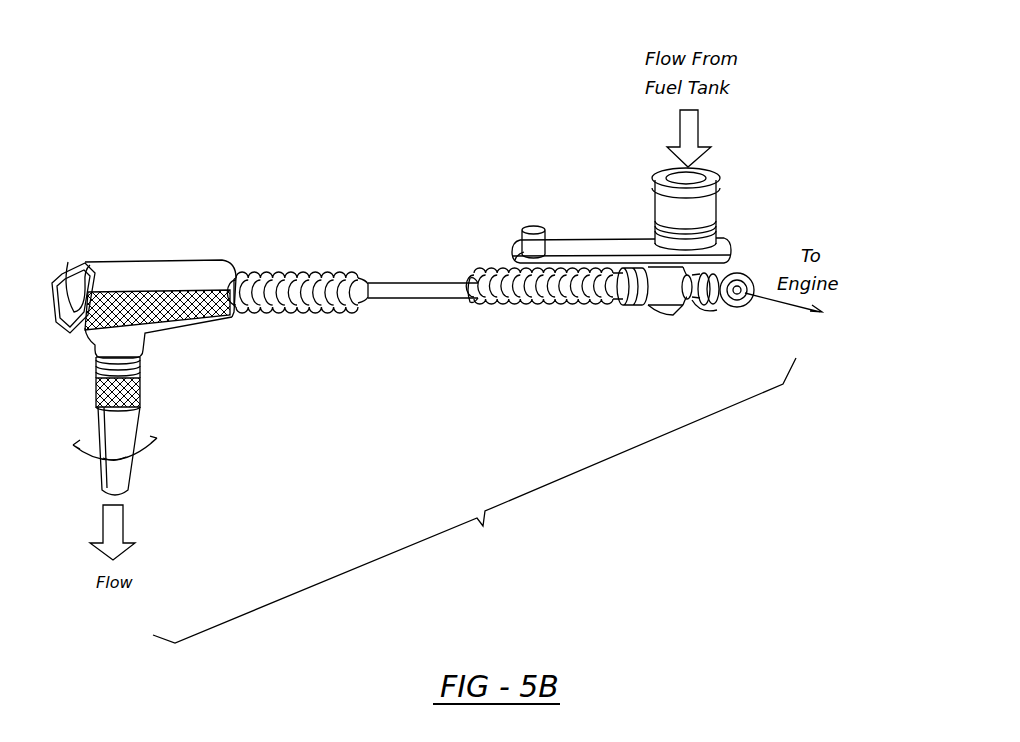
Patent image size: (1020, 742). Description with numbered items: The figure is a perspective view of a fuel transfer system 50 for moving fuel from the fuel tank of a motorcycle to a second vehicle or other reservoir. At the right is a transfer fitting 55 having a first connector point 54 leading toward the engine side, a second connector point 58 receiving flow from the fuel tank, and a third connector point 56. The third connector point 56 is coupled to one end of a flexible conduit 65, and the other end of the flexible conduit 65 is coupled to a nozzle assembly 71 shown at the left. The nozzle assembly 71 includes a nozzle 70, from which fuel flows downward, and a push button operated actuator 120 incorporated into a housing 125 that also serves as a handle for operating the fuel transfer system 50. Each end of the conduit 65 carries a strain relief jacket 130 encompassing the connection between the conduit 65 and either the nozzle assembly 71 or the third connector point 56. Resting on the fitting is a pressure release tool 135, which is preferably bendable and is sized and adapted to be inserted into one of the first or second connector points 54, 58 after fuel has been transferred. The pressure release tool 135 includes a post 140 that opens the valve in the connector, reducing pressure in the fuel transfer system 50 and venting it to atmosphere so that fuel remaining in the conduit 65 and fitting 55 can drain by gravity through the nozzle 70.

The fuel transfer system 50 is at (474, 500).
The first connector point 54 is at (732, 308).
The transfer fitting 55 is at (671, 306).
The third connector point 56 is at (621, 300).
The second connector point 58 is at (712, 177).
The flexible conduit 65 is at (432, 290).
The nozzle 70 is at (127, 438).
The nozzle assembly 71 is at (293, 373).
The push button operated actuator 120 is at (68, 262).
The housing 125 is at (179, 311).
The strain relief jackets 130 is at (303, 328).
The pressure release tool 135 is at (600, 262).
The post 140 is at (528, 240).